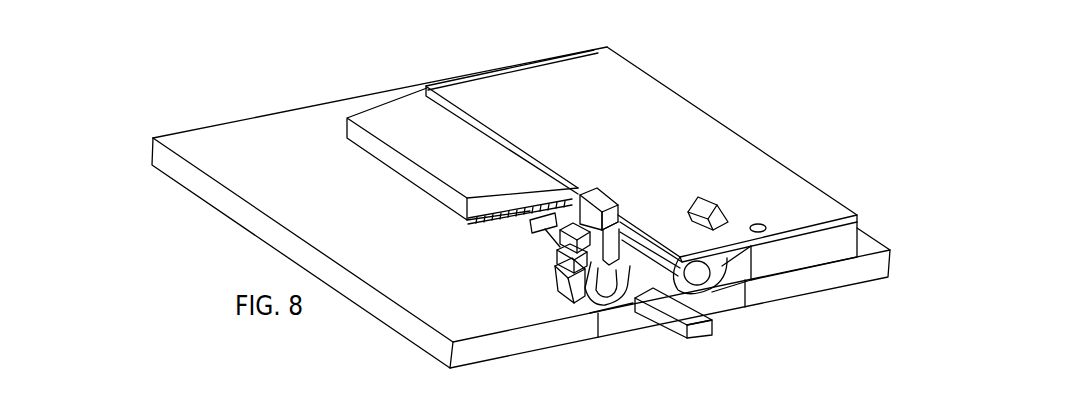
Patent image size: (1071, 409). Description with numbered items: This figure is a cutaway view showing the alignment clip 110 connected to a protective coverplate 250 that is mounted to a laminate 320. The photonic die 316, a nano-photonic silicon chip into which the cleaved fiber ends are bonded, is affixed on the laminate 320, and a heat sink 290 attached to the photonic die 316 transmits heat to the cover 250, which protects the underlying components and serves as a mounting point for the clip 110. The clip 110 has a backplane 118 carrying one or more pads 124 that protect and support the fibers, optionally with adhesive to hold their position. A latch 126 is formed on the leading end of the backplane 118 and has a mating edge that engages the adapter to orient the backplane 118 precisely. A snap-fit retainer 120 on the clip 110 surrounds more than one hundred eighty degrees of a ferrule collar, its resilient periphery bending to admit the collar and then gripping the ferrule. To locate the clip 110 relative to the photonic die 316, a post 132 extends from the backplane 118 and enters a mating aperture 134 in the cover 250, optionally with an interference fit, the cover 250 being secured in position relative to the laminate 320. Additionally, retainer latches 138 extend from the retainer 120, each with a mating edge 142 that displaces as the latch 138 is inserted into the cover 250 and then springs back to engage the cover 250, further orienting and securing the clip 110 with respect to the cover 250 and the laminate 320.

The alignment clip 110 is at (633, 318).
The backplane 118 is at (667, 324).
The snap-fit retainer 120 is at (567, 286).
The pad 124 is at (540, 220).
The latch 126 is at (719, 326).
The post 132 is at (604, 210).
The mating aperture 134 is at (588, 190).
The retainer latch 138 is at (703, 202).
The mating edge 142 is at (733, 220).
The coverplate 250 is at (655, 99).
The heat sink 290 is at (397, 122).
The photonic die 316 is at (504, 226).
The laminate 320 is at (303, 118).